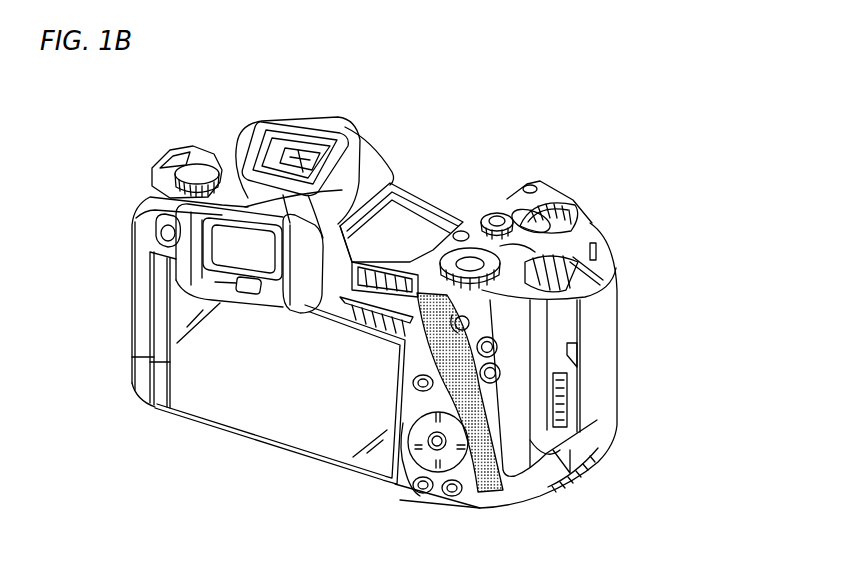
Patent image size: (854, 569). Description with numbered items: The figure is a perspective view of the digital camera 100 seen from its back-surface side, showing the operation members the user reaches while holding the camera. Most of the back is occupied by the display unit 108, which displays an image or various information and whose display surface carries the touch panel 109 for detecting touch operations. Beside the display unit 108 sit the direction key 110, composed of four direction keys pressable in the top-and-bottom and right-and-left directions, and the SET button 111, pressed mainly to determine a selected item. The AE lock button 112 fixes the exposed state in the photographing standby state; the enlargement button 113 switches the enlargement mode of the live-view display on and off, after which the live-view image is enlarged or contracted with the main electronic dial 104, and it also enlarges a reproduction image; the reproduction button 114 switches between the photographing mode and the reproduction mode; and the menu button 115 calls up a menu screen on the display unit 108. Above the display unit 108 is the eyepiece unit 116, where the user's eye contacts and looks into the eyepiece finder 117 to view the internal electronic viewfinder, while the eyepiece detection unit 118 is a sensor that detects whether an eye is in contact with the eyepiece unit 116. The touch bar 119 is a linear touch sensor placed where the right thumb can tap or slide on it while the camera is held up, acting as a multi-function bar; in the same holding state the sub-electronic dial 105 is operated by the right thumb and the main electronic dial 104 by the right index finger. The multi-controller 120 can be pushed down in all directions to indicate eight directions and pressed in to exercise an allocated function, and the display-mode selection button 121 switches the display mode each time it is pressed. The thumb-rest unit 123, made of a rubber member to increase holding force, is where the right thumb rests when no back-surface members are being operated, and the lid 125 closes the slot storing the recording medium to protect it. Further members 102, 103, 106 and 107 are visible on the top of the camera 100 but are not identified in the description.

The digital camera 100 is at (603, 147).
The mode dial 102 is at (201, 165).
The main electronic dial 103 is at (466, 258).
The main electronic dial 104 is at (548, 200).
The sub-electronic dial 105 is at (488, 258).
The movie shooting button / dial 106 is at (497, 212).
The top cover 107 is at (407, 208).
The display unit 108 is at (258, 368).
The touch panel 109 is at (237, 405).
The direction key 110 is at (458, 458).
The SET button 111 is at (432, 446).
The AE lock button 112 is at (418, 388).
The enlargement button 113 is at (501, 373).
The reproduction button 114 is at (423, 493).
The menu button 115 is at (162, 234).
The eyepiece unit 116 is at (250, 232).
The eyepiece finder 117 is at (305, 223).
The eyepiece detection unit 118 is at (238, 286).
The touch bar 119 is at (392, 285).
The multi-controller 120 is at (470, 324).
The display-mode selection button 121 is at (498, 347).
The thumb-rest unit 123 is at (447, 308).
The lid 125 is at (545, 433).